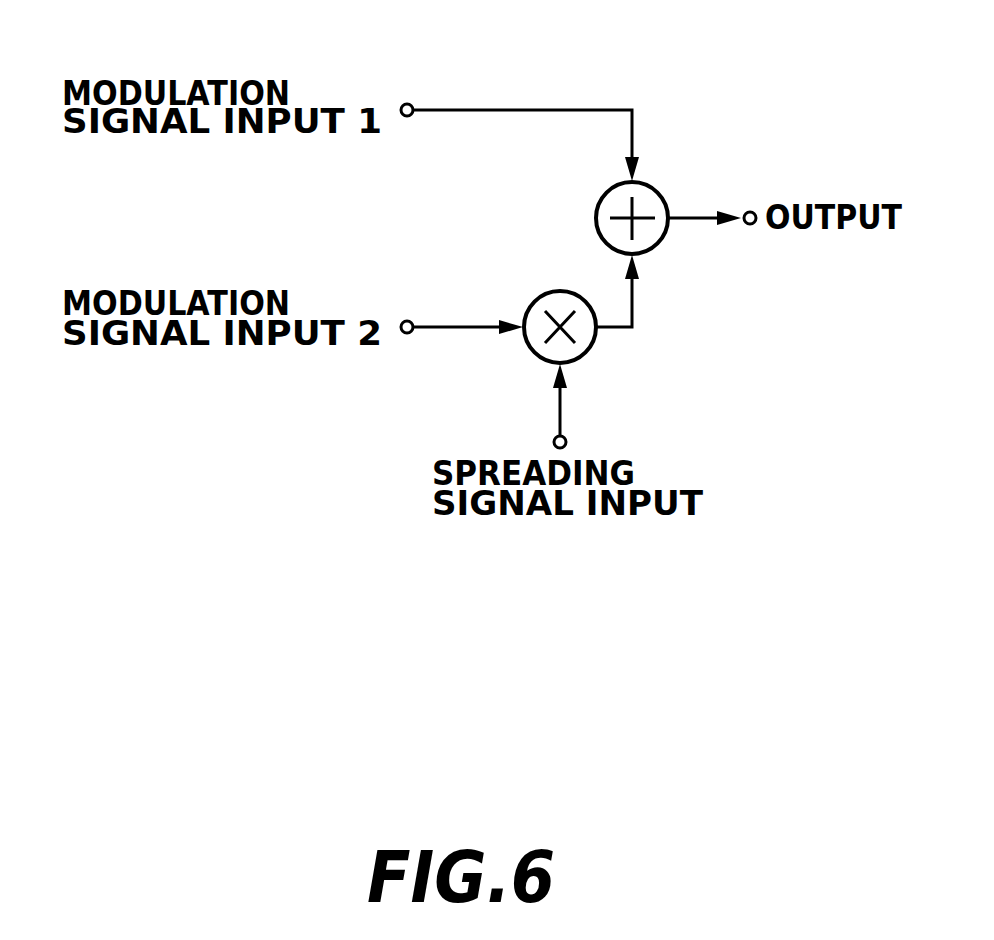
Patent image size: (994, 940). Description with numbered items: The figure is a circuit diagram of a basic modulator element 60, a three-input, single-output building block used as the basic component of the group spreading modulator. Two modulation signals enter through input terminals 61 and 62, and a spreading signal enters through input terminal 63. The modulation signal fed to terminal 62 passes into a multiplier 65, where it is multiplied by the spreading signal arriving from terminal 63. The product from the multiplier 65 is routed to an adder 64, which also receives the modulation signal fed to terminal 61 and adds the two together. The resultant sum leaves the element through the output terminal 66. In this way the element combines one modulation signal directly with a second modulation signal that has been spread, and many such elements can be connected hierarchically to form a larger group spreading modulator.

The basic modulator element 60 is at (750, 170).
The input terminal 61 is at (407, 98).
The input terminal 62 is at (407, 320).
The input terminal 63 is at (566, 442).
The adder 64 is at (658, 191).
The multiplier 65 is at (597, 345).
The output terminal 66 is at (750, 224).